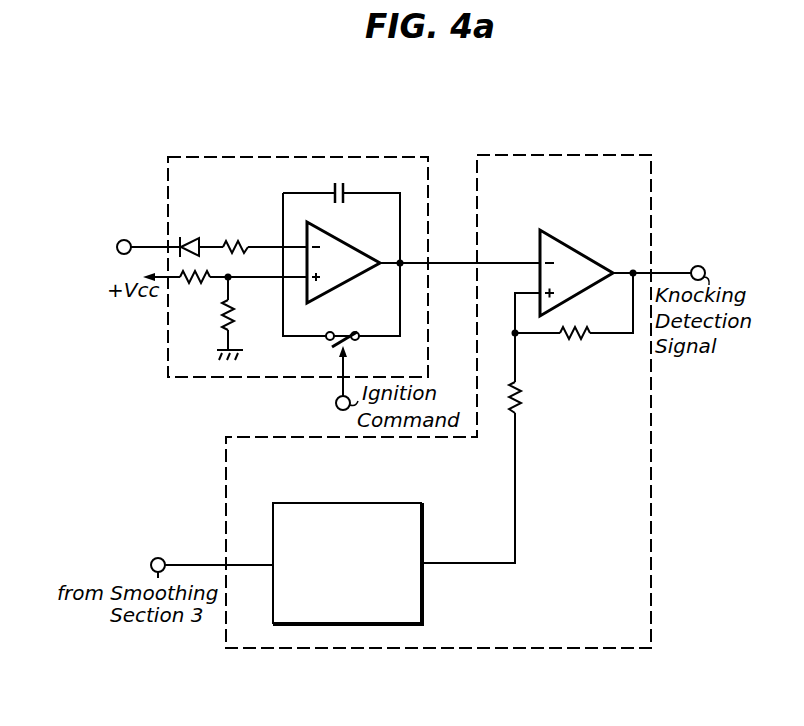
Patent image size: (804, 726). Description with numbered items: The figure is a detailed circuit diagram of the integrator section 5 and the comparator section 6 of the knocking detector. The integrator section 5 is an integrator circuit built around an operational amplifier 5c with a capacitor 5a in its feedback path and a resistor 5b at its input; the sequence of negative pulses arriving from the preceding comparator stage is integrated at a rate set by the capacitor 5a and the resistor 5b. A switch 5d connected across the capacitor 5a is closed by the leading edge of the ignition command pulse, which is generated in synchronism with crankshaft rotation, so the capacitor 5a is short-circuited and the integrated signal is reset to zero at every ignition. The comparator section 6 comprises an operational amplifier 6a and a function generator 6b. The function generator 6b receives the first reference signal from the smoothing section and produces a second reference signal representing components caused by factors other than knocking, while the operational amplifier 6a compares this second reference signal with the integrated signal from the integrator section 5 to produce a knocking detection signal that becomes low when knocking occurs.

The integrator section 5 is at (405, 157).
The capacitor 5a is at (350, 190).
The resistor 5b is at (232, 241).
The operational amplifier 5c is at (356, 278).
The switch 5d is at (335, 346).
The comparator section 6 is at (614, 155).
The operational amplifier 6a is at (577, 251).
The function generator 6b is at (352, 625).